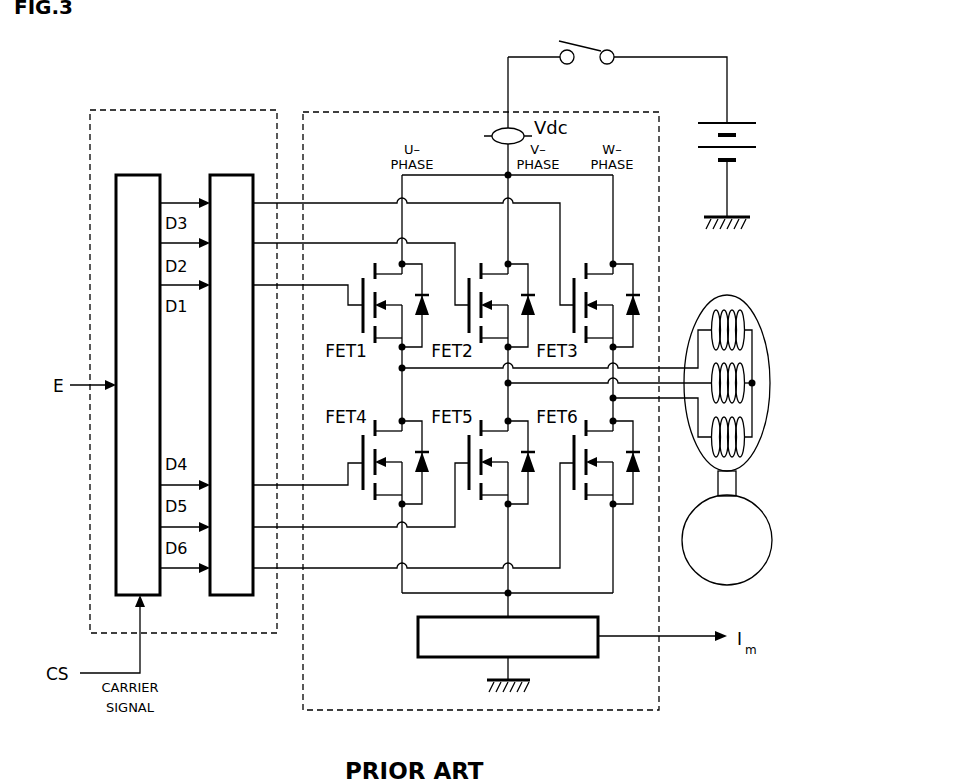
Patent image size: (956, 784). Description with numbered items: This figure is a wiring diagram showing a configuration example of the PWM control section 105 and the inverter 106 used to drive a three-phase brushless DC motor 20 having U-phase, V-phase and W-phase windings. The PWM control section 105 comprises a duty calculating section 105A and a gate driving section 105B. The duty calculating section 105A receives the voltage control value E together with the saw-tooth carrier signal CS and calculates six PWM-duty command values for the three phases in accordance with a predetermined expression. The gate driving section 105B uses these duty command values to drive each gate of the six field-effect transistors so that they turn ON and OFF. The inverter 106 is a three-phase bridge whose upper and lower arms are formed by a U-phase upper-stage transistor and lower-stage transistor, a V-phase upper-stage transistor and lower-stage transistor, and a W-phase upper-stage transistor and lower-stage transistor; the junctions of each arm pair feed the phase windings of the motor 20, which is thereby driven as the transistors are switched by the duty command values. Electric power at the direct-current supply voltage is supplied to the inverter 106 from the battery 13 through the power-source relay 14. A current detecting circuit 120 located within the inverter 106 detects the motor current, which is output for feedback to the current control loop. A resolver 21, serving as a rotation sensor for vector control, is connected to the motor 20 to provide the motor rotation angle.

The PWM control section 105 is at (270, 99).
The duty calculating section 105A is at (158, 164).
The gate driving section 105B is at (252, 164).
The inverter 106 is at (647, 98).
The power-source relay 14 is at (600, 42).
The battery 13 is at (745, 122).
The motor 20 is at (739, 298).
The resolver 21 is at (757, 507).
The current detecting circuit 120 is at (601, 626).